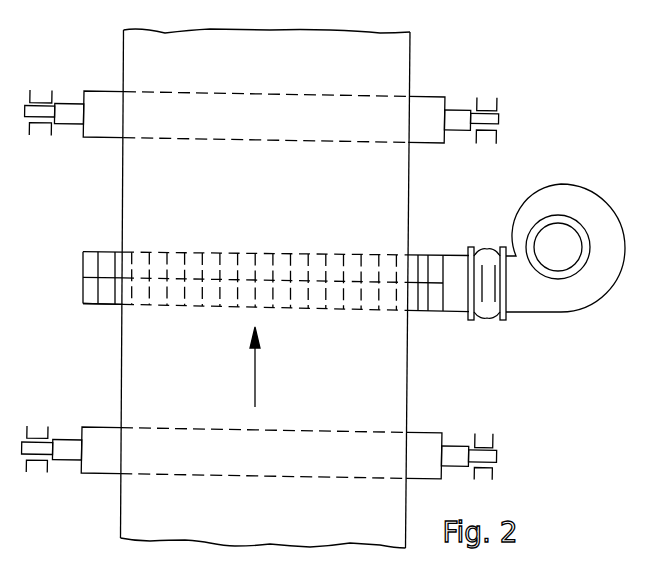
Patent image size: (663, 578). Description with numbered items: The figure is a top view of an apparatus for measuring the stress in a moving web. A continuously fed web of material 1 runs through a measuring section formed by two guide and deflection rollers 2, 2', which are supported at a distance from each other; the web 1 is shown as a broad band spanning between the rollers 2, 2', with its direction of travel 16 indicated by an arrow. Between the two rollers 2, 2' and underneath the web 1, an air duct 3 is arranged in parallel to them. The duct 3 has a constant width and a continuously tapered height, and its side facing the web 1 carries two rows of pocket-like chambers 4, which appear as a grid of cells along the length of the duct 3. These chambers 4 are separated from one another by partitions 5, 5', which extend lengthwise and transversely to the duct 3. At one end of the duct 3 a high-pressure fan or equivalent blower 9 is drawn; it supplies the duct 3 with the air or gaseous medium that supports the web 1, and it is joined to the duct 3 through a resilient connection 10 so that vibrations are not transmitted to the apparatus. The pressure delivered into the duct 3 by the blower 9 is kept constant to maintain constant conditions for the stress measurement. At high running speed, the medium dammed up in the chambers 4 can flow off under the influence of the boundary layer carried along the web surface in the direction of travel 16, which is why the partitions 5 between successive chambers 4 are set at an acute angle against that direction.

The web of material 1 is at (123, 184).
The guide and deflection roller 2 is at (259, 478).
The guide and deflection roller 2' is at (261, 93).
The air duct 3 is at (455, 300).
The pocket-like chambers 4 is at (107, 262).
The partition 5 is at (247, 303).
The partition 5' is at (222, 314).
The blower 9 is at (563, 298).
The resilient connection 10 is at (487, 258).
The direction of travel 16 is at (257, 380).